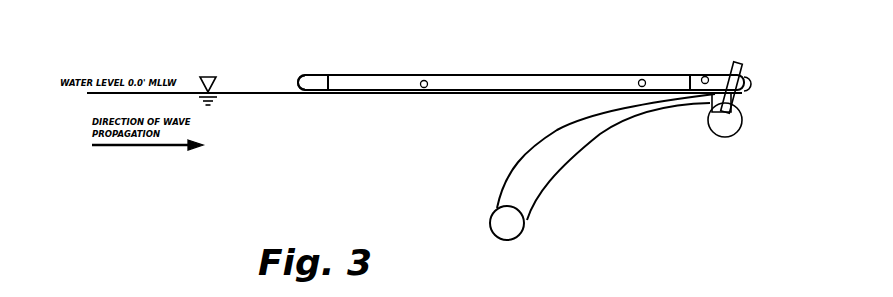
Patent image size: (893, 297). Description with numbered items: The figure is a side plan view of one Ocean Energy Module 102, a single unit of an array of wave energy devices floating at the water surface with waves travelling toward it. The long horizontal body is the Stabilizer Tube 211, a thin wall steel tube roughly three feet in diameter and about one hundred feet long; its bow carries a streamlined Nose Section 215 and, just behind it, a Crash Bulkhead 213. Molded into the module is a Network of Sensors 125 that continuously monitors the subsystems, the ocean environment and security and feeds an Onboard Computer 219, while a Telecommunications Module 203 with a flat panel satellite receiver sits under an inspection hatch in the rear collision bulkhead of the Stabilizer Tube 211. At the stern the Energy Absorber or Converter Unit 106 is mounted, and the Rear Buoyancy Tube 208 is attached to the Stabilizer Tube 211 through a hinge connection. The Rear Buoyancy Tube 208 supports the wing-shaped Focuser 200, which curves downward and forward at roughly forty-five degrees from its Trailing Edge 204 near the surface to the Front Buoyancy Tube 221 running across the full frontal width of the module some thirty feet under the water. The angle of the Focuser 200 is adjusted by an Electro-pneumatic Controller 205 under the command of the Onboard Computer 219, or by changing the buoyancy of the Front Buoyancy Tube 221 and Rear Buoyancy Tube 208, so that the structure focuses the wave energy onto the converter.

The Ocean Energy Module 102 is at (388, 95).
The Energy Absorber or Converter Unit 106 is at (739, 63).
The Network of Sensors 125 is at (424, 78).
The Focuser 200 is at (510, 185).
The Telecommunications Module 203 is at (705, 76).
The Trailing Edge 204 is at (711, 105).
The Electro-pneumatic Controller 205 is at (742, 106).
The Rear Buoyancy Tube 208 is at (740, 127).
The Stabilizer Tube 211 is at (508, 78).
The Crash Bulkhead 213 is at (328, 75).
The Nose Section 215 is at (303, 73).
The Onboard Computer 219 is at (641, 78).
The Front Buoyancy Tube 221 is at (527, 220).